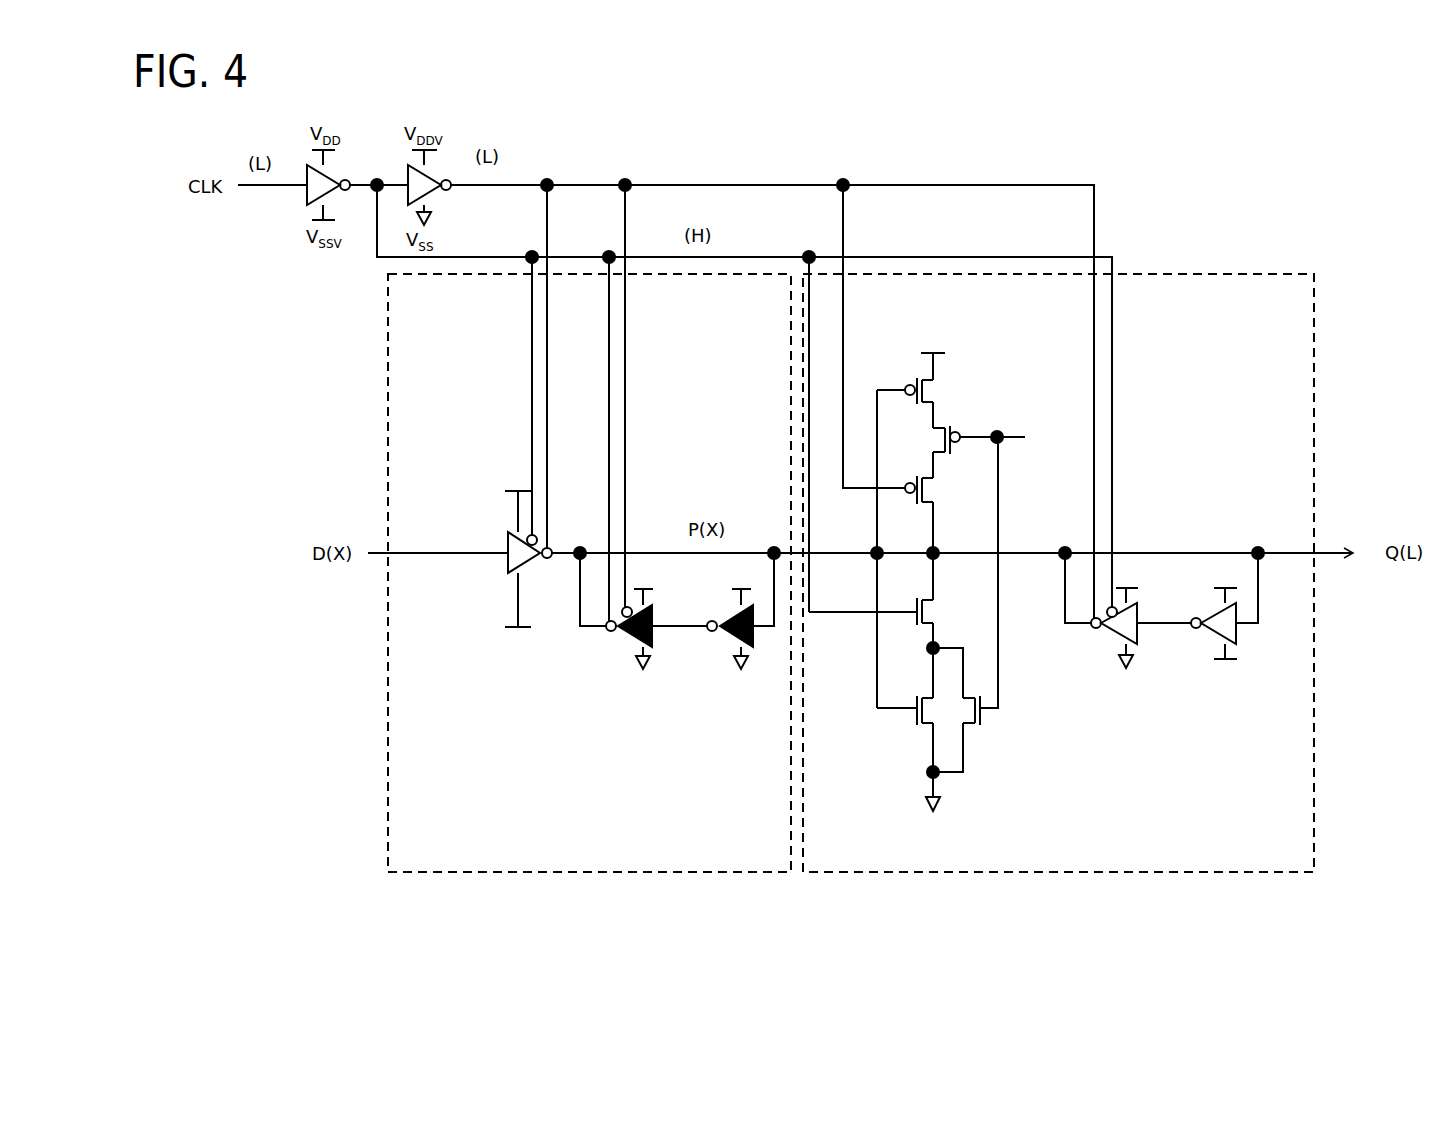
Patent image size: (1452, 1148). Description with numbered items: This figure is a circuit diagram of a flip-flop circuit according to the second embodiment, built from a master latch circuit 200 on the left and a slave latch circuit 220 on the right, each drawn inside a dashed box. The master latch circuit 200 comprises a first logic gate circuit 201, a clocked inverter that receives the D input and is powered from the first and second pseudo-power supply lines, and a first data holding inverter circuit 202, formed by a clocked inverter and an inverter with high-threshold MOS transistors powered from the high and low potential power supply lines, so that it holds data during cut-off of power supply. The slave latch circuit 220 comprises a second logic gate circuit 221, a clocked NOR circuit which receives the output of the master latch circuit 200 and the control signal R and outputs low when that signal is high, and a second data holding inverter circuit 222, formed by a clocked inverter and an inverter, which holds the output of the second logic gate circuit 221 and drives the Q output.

The master latch circuit 200 is at (646, 873).
The slave latch circuit 220 is at (1018, 873).
The first logic gate circuit 201 is at (480, 462).
The first data holding inverter circuit 202 is at (677, 712).
The second logic gate circuit 221 is at (879, 758).
The second data holding inverter circuit 222 is at (1165, 706).